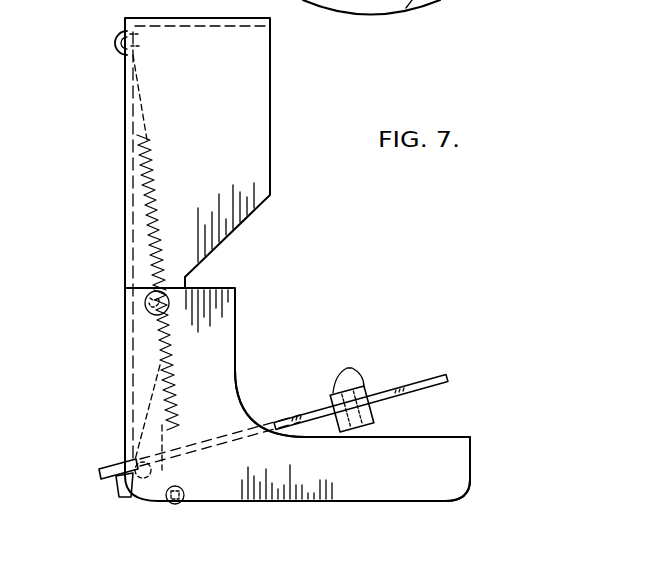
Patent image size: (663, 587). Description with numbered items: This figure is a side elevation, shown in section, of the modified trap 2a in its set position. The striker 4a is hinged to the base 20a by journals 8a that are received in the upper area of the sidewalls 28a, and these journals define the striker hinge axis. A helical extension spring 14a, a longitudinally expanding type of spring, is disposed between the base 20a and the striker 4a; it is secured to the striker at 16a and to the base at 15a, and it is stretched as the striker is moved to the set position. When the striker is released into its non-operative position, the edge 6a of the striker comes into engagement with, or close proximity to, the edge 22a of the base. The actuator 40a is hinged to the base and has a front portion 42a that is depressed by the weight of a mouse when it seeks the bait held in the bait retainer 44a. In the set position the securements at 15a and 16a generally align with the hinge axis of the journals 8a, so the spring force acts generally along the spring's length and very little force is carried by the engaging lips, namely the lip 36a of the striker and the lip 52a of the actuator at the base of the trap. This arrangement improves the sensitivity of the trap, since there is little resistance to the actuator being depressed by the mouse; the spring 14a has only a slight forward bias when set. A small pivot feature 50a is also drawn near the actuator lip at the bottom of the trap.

The modified trap 2a is at (323, 316).
The striker 4a is at (280, 118).
The edge of the striker 6a is at (272, 22).
The journals of the striker 8a is at (145, 303).
The helical extension spring 14a is at (188, 276).
The spring securement to the base 15a is at (178, 505).
The spring securement to the striker 16a is at (126, 31).
The base 20a is at (437, 478).
The edge of the base 22a is at (470, 435).
The sidewalls 28a is at (236, 348).
The lip of the striker 36a is at (122, 492).
The actuator 40a is at (382, 375).
The front portion of the actuator 42a is at (447, 378).
The bait retainer 44a is at (345, 370).
The pivot 50a is at (135, 470).
The lip of the actuator 52a is at (100, 476).